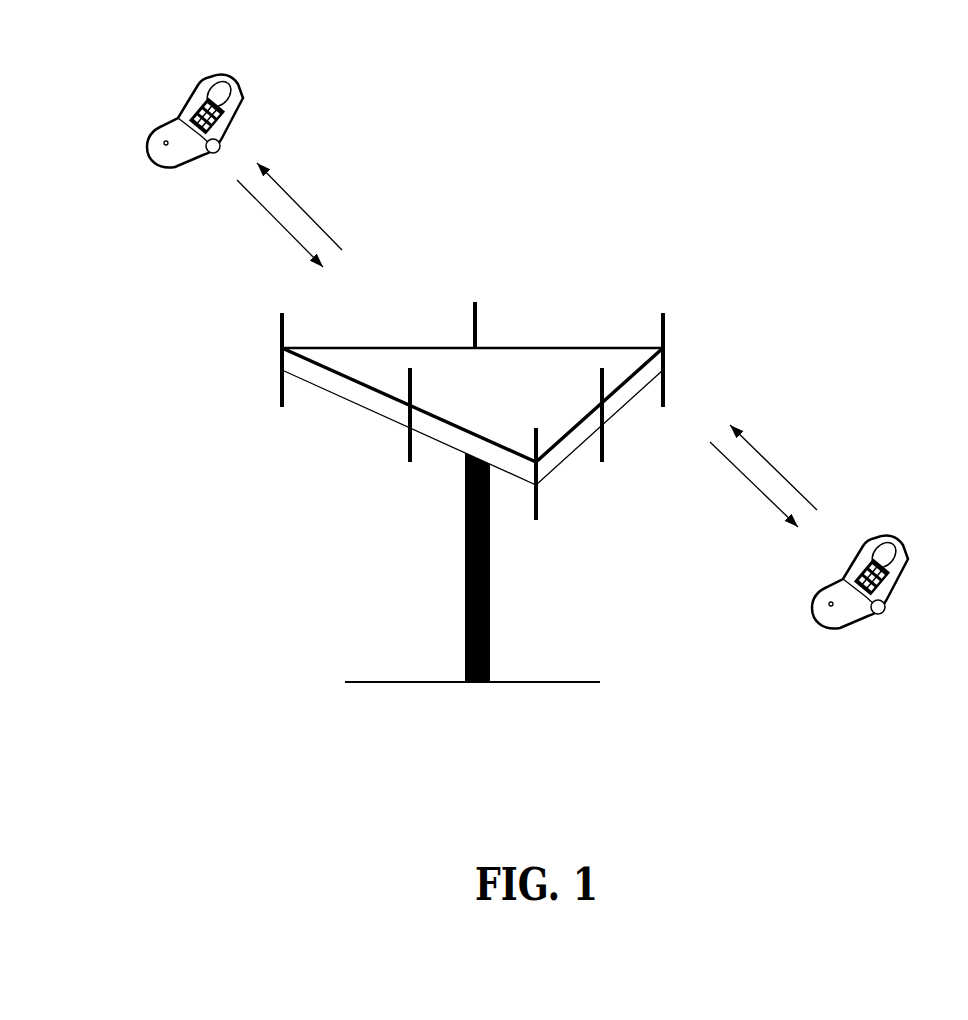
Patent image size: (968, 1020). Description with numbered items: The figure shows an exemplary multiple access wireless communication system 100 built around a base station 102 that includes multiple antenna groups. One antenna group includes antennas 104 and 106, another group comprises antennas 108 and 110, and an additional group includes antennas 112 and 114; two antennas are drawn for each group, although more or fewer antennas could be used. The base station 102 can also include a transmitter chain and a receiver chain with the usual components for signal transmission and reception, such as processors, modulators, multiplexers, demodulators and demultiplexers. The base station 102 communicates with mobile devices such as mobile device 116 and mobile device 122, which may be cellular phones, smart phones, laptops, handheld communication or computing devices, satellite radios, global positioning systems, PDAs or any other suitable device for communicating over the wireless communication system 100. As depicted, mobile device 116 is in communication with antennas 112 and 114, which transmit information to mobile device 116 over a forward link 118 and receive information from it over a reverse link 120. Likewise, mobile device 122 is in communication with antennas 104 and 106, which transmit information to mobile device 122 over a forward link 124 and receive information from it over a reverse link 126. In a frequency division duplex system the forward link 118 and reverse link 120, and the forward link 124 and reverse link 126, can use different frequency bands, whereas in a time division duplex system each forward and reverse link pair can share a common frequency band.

The wireless communication system 100 is at (630, 127).
The base station 102 is at (490, 683).
The antenna 104 is at (665, 312).
The antenna 106 is at (602, 442).
The antenna 108 is at (537, 503).
The antenna 110 is at (410, 462).
The antenna 112 is at (283, 313).
The antenna 114 is at (476, 308).
The mobile device 116 is at (205, 76).
The forward link 118 is at (297, 207).
The reverse link 120 is at (290, 237).
The mobile device 122 is at (868, 537).
The forward link 124 is at (758, 493).
The reverse link 126 is at (770, 460).